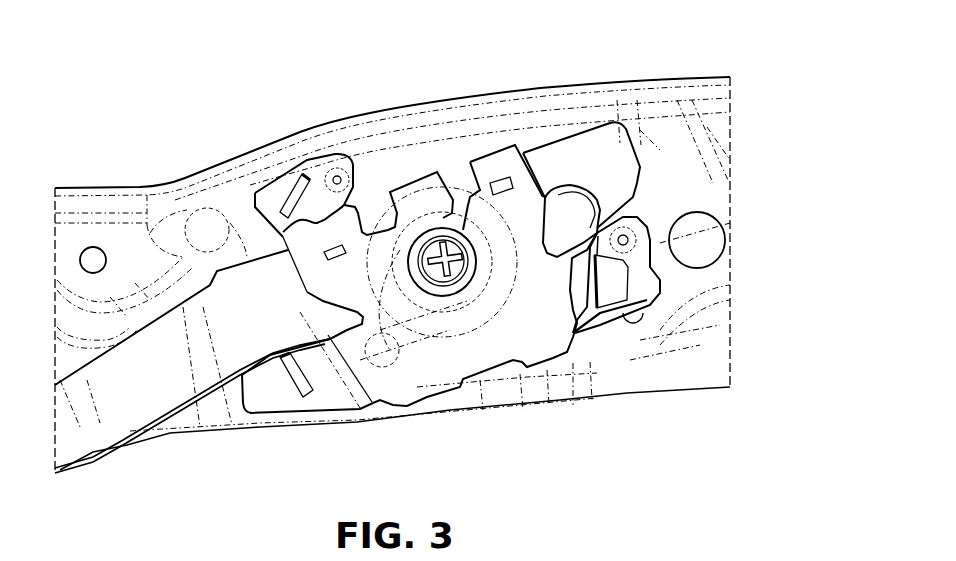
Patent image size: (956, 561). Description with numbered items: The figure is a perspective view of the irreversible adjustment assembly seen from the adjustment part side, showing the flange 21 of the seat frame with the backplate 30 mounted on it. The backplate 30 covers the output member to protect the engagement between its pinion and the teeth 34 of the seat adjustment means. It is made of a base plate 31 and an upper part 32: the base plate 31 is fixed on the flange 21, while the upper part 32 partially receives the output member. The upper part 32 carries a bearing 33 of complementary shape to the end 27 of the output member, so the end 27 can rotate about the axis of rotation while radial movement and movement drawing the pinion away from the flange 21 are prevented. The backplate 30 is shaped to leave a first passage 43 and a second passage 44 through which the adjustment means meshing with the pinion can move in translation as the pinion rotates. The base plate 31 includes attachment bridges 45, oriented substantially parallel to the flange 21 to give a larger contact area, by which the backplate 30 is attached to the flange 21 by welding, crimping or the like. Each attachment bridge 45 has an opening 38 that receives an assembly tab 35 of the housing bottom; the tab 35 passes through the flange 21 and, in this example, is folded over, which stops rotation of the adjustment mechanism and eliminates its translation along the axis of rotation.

The flange 21 is at (167, 203).
The end 27 is at (440, 240).
The backplate 30 is at (430, 209).
The base plate 31 is at (271, 190).
The upper part 32 is at (463, 310).
The bearing 33 is at (463, 240).
The teeth 34 is at (546, 193).
The tab 35 is at (604, 288).
The opening 38 is at (301, 176).
The first passage 43 is at (290, 274).
The second passage 44 is at (553, 216).
The attachment bridge 45 is at (288, 177).